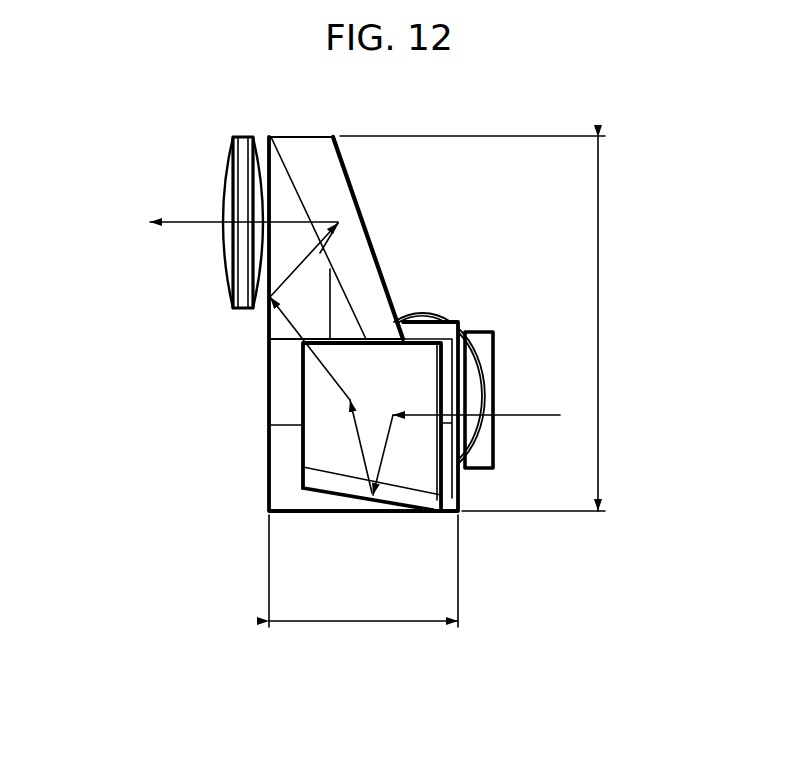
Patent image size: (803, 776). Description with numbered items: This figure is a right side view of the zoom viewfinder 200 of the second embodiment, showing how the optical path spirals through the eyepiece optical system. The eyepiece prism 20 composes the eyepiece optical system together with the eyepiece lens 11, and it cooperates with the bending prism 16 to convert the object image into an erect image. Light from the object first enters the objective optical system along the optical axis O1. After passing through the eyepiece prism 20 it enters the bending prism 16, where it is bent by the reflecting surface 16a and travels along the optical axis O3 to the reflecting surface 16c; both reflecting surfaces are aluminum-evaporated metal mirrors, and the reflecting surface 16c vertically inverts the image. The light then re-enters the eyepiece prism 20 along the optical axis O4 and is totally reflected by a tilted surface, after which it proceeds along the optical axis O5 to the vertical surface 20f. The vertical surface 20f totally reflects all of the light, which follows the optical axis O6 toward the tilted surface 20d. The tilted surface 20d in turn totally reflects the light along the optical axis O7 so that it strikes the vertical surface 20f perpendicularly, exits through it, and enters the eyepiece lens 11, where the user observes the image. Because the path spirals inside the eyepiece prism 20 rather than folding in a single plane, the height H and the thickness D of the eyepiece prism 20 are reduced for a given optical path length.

The viewfinder 200 is at (167, 74).
The eyepiece prism 20 is at (334, 169).
The tilted surface 20d is at (348, 230).
The vertical surface 20f is at (264, 143).
The eyepiece lens 11 is at (243, 280).
The bending prism 16 is at (412, 470).
The reflecting surface 16a is at (432, 377).
The reflecting surface 16c is at (322, 497).
The optical axis O1 is at (518, 416).
The optical axis O3 is at (373, 448).
The optical axis O4 is at (368, 449).
The optical axis O5 is at (320, 363).
The optical axis O6 is at (322, 252).
The optical axis O7 is at (187, 220).
The height H is at (483, 323).
The thickness D is at (363, 584).